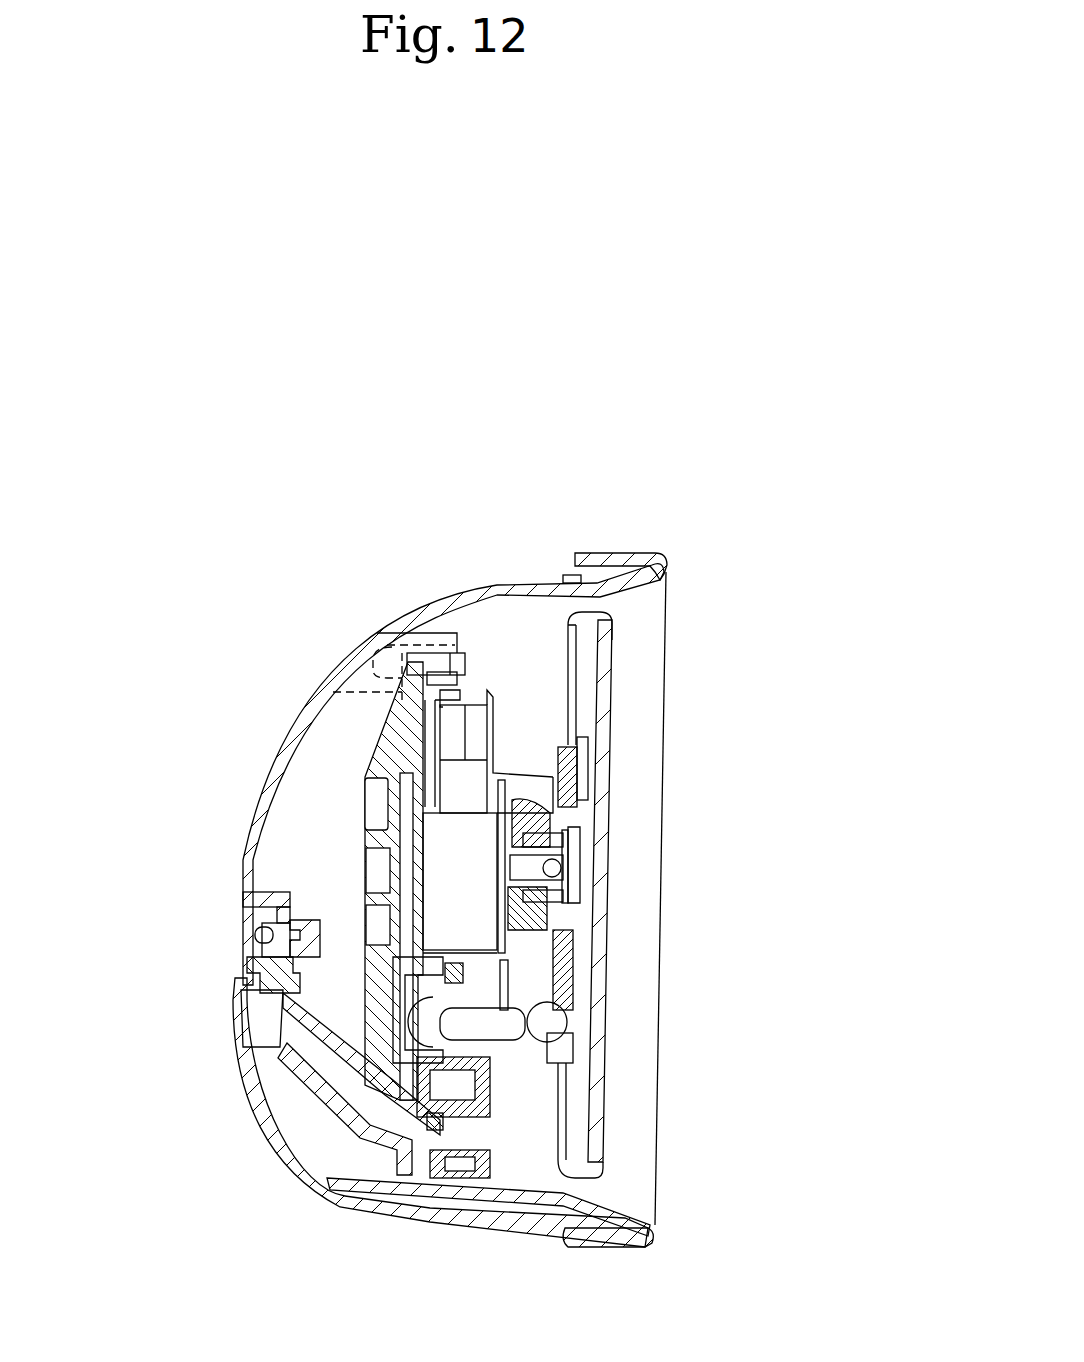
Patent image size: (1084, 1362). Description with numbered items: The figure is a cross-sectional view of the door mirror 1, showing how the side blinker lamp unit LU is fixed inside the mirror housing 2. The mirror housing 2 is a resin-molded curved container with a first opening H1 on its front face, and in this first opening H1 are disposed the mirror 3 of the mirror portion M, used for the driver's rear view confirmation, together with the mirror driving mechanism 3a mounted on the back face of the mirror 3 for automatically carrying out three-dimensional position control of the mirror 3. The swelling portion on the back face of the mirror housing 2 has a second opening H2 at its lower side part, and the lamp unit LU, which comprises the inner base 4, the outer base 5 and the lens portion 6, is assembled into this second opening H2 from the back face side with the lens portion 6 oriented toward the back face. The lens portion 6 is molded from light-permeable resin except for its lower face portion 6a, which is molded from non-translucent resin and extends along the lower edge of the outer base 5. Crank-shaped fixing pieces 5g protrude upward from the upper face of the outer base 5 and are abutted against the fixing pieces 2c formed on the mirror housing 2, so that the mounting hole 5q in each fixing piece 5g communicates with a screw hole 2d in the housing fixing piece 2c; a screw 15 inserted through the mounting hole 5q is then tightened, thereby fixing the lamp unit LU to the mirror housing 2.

The door mirror 1 is at (560, 482).
The mirror housing 2 is at (457, 590).
The fixing pieces 2c is at (273, 897).
The screw holes 2d is at (317, 940).
The mirror 3 is at (612, 832).
The mirror driving mechanism 3a is at (510, 1087).
The inner base 4 is at (313, 1088).
The outer base 5 is at (357, 1100).
The fixing pieces 5g is at (273, 915).
The mounting hole 5q is at (270, 933).
The lens portion 6 is at (250, 1097).
The lower face portion 6a is at (417, 1213).
The screw 15 is at (247, 948).
The first opening H1 is at (603, 602).
The second opening H2 is at (260, 970).
The mirror portion M is at (645, 697).
The lamp unit LU is at (233, 1047).